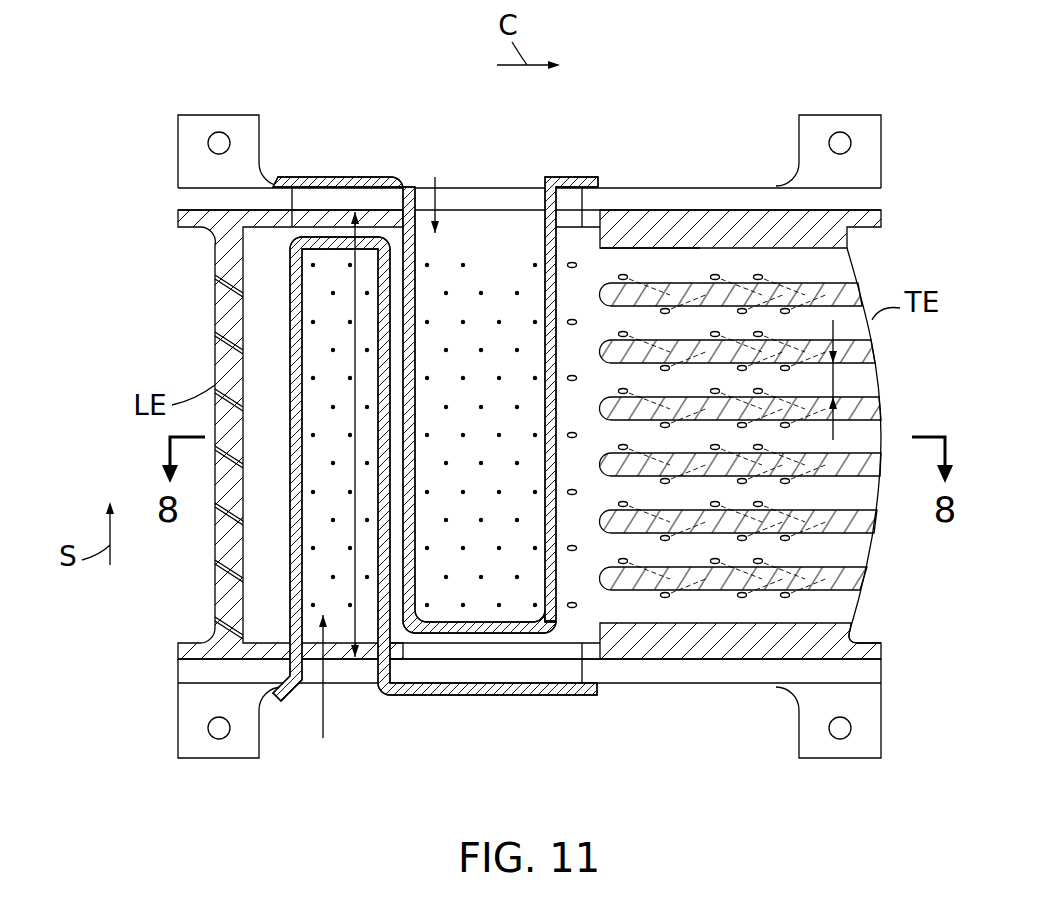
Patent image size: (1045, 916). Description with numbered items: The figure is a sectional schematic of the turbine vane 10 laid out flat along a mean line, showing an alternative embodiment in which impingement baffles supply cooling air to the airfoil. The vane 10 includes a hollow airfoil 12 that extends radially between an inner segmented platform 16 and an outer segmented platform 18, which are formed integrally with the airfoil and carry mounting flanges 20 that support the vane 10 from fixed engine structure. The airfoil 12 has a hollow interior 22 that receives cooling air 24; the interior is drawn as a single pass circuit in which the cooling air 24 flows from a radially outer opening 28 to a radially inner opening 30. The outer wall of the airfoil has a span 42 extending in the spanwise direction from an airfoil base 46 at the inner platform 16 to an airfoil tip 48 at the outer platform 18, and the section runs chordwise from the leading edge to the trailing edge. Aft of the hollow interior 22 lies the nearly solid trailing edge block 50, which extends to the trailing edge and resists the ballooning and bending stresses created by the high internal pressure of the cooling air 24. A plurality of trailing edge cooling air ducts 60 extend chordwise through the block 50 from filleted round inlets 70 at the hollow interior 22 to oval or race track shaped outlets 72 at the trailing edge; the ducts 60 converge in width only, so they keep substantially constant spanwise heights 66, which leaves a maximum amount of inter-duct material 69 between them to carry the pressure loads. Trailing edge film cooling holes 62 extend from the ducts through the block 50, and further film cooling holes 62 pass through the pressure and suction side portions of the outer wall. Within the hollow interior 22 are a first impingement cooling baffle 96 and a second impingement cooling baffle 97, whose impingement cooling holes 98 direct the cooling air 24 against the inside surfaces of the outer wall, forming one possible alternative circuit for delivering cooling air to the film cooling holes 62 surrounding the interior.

The turbine vane 10 is at (371, 749).
The hollow airfoil 12 is at (215, 600).
The radially inner segmented platform 16 is at (695, 684).
The radially outer segmented platform 18 is at (666, 188).
The mounting flanges 20 is at (232, 118).
The hollow interior 22 is at (452, 337).
The cooling air 24 is at (437, 185).
The radially outer opening 28 is at (560, 197).
The radially inner opening 30 is at (580, 659).
The span 42 is at (357, 445).
The airfoil base 46 is at (647, 661).
The airfoil tip 48 is at (607, 217).
The trailing edge block 50 is at (752, 222).
The trailing edge cooling air ducts 60 is at (848, 438).
The film cooling holes 62 is at (788, 595).
The spanwise heights 66 is at (845, 385).
The inter-duct material 69 is at (868, 578).
The filleted round inlets 70 is at (607, 247).
The outlets 72 is at (857, 250).
The first impingement cooling baffle 96 is at (423, 697).
The second impingement cooling baffle 97 is at (335, 178).
The impingement cooling holes 98 is at (330, 350).